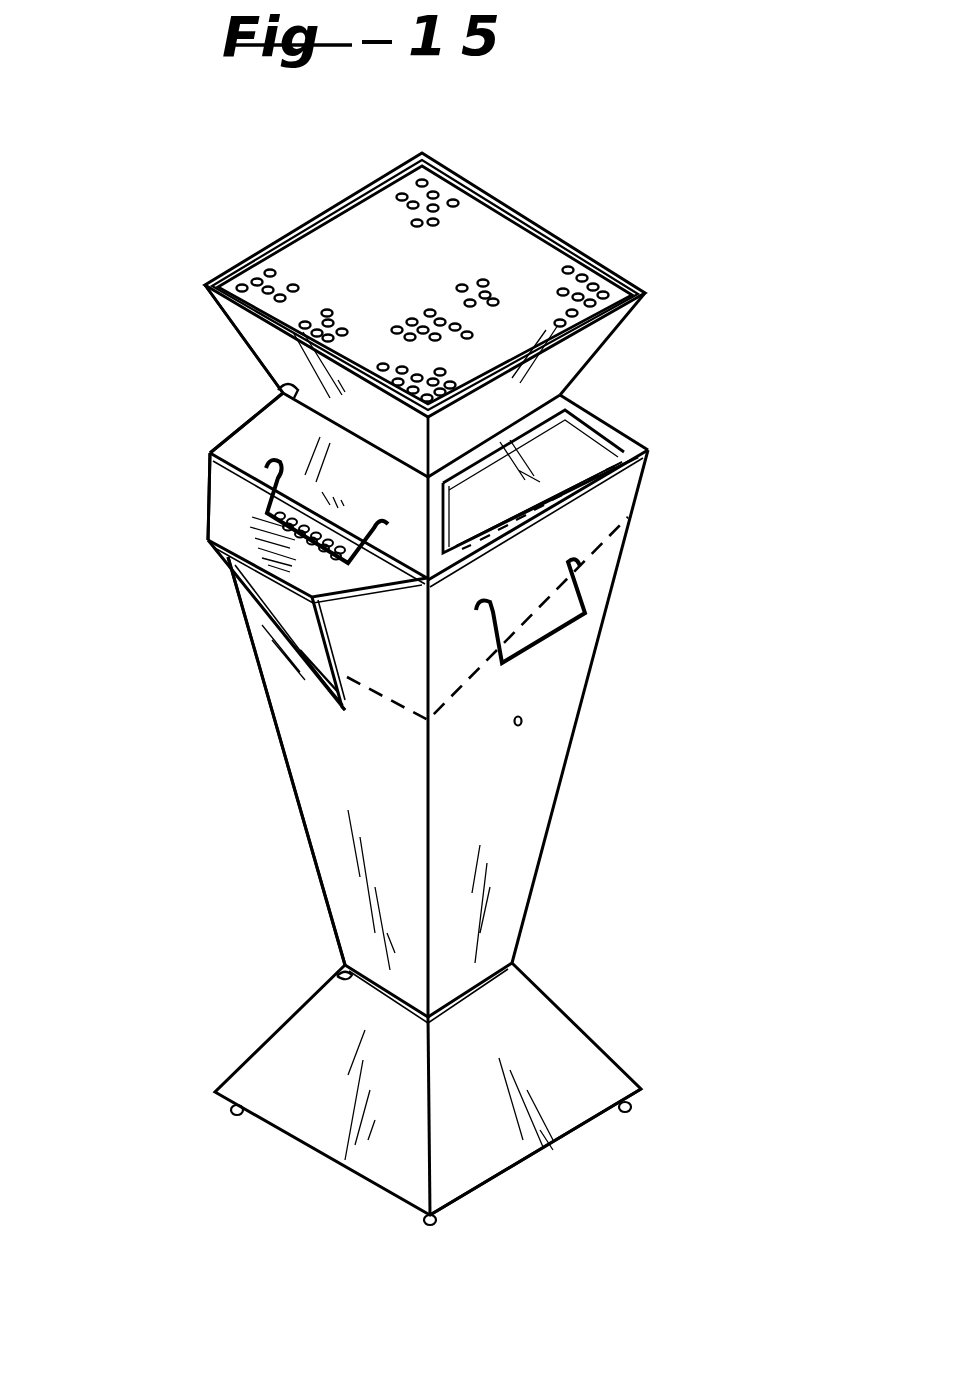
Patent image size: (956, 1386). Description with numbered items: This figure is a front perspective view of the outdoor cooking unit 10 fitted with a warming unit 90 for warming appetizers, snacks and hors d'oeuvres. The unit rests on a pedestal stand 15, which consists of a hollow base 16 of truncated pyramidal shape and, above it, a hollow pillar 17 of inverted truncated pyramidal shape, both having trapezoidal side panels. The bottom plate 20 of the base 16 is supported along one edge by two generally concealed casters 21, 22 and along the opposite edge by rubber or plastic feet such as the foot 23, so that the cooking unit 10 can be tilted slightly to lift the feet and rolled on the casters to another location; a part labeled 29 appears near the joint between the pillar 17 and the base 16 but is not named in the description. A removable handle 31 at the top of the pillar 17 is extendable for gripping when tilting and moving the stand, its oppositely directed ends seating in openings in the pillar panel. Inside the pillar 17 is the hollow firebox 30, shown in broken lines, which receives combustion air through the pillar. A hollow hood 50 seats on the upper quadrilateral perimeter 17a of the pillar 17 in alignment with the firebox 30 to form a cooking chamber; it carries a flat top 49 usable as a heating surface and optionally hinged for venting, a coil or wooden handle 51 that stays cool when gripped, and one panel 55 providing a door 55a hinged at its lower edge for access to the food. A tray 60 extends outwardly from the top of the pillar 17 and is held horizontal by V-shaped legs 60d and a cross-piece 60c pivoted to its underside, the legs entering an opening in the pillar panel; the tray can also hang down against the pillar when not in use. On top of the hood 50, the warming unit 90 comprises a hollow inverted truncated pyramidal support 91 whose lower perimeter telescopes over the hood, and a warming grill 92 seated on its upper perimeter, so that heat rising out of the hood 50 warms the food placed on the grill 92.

The outdoor cooking unit 10 is at (188, 875).
The pedestal stand 15 is at (594, 683).
The hollow base 16 is at (568, 1005).
The hollow pillar 17 is at (298, 812).
The upper quadrilateral perimeter of the pillar 17a is at (207, 446).
The bottom plate of the base 20 is at (512, 1175).
The caster 21 is at (236, 1116).
The caster 22 is at (430, 1226).
The foot 23 is at (632, 1106).
The base joint 29 is at (337, 977).
The hollow firebox 30 is at (640, 522).
The removable handle 31 is at (590, 600).
The flat top 49 is at (283, 389).
The hood 50 is at (230, 430).
The handle 51 is at (362, 565).
The panel of the hood 55 is at (602, 432).
The door 55a is at (570, 461).
The tray 60 is at (218, 502).
The cross-piece 60c is at (320, 645).
The legs 60d is at (328, 672).
The warming unit 90 is at (505, 238).
The support 91 is at (263, 344).
The warming grill 92 is at (423, 291).